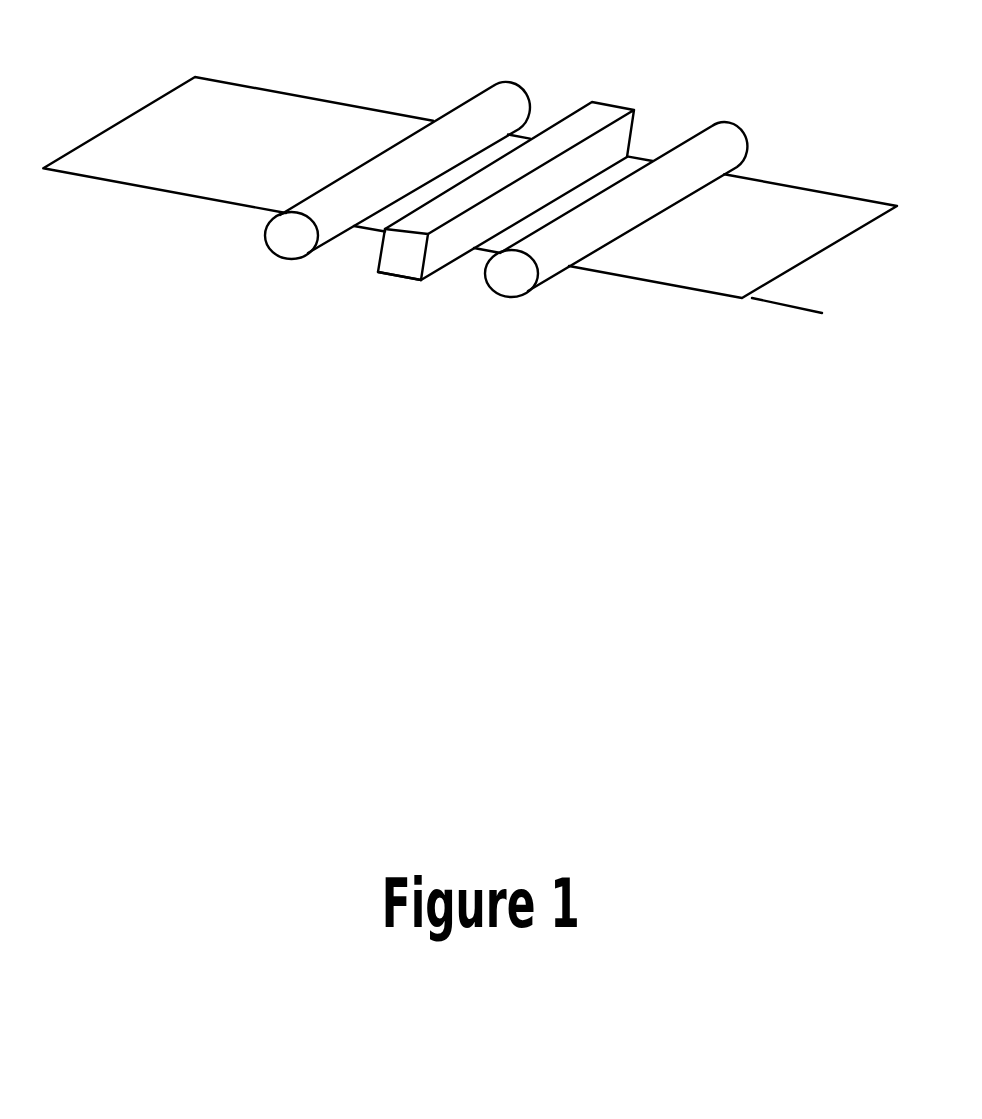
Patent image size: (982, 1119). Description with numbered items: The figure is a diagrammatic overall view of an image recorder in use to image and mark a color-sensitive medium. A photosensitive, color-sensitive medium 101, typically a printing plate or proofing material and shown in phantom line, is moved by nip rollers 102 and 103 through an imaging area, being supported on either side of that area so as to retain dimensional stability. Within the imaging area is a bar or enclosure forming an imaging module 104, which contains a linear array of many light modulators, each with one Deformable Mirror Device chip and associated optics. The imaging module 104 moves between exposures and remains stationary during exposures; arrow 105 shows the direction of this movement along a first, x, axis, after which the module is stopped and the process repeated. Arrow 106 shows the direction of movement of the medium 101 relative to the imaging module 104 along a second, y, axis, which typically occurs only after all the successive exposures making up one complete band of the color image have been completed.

The color-sensitive medium 101 is at (298, 92).
The nip roller 102 is at (513, 90).
The nip roller 103 is at (730, 125).
The imaging module 104 is at (610, 102).
The arrow 105 is at (400, 278).
The arrow 106 is at (793, 307).